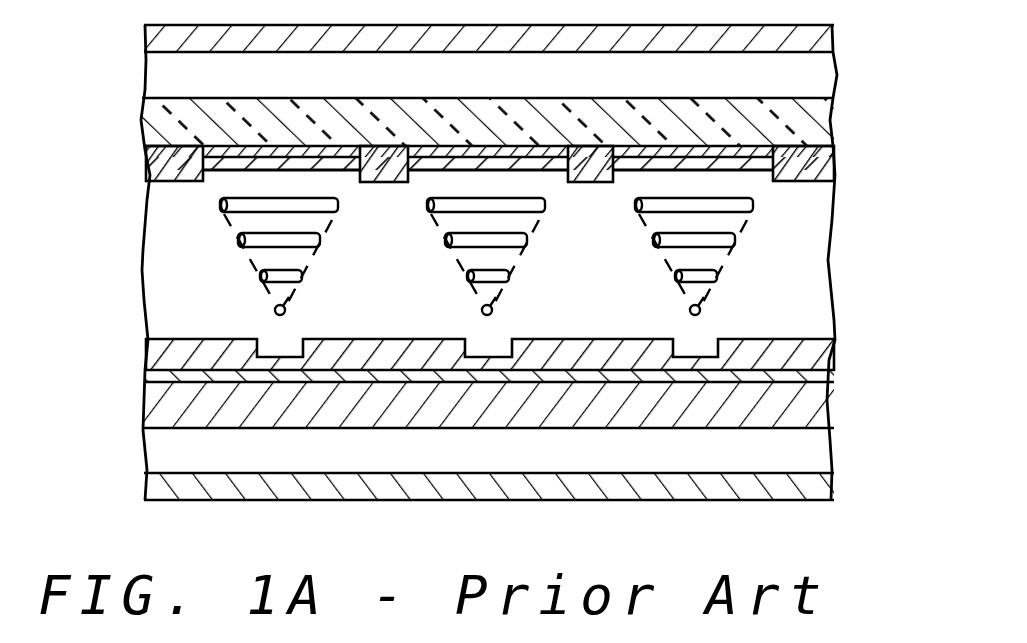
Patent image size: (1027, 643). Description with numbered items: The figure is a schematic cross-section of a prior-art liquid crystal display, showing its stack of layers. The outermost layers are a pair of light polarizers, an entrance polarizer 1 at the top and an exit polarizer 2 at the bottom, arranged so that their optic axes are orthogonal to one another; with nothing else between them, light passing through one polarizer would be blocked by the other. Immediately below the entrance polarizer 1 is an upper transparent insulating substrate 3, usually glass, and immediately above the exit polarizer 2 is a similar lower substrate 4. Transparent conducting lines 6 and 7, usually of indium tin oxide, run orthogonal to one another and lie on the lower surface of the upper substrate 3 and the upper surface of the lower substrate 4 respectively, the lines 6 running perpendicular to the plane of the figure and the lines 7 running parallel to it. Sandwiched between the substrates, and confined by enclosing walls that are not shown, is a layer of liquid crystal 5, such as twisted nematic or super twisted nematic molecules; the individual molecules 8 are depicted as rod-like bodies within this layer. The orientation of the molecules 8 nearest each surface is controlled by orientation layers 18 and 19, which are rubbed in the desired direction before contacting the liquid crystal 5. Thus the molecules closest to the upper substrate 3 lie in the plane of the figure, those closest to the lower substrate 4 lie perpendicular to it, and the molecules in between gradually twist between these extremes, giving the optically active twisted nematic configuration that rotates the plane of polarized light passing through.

The entrance polarizer 1 is at (158, 40).
The exit polarizer 2 is at (160, 487).
The upper transparent insulating substrate 3 is at (162, 122).
The lower substrate 4 is at (158, 405).
The liquid crystal layer 5 is at (158, 277).
The transparent conducting lines 6 is at (196, 162).
The transparent conducting lines 7 is at (158, 377).
The liquid crystal molecules 8 is at (258, 260).
The orientation layer 18 is at (834, 171).
The orientation layer 19 is at (823, 360).